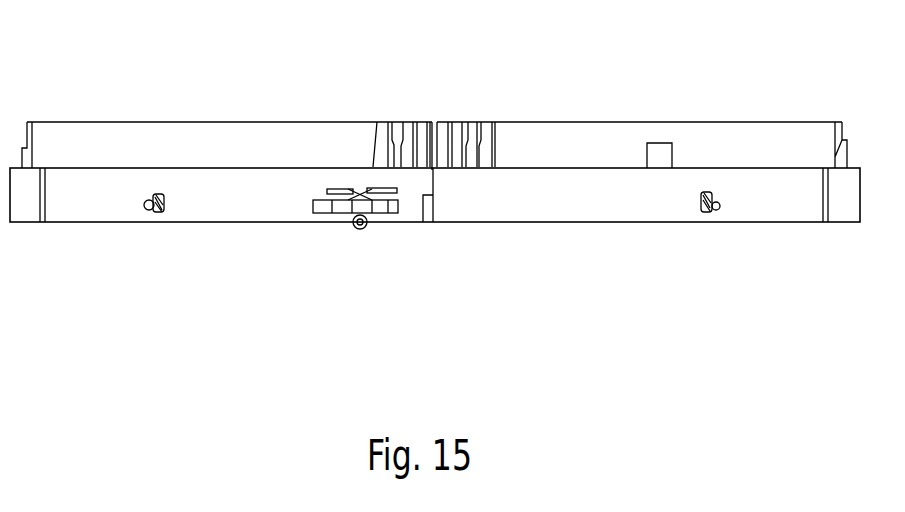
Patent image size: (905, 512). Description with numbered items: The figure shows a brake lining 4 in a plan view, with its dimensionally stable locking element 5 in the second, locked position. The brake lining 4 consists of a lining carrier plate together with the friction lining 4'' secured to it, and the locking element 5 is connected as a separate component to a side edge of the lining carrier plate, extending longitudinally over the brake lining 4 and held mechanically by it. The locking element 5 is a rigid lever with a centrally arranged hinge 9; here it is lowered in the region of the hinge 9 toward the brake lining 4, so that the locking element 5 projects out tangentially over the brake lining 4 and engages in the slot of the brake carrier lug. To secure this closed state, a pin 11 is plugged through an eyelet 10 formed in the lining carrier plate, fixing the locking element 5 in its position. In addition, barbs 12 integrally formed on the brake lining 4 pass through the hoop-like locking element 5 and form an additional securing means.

The brake lining 4 is at (435, 278).
The friction lining 4'' is at (434, 101).
The locking element 5 is at (234, 208).
The hinge 9 is at (429, 222).
The eyelet 10 is at (328, 205).
The pin 11 is at (355, 228).
The barbs 12 is at (152, 212).